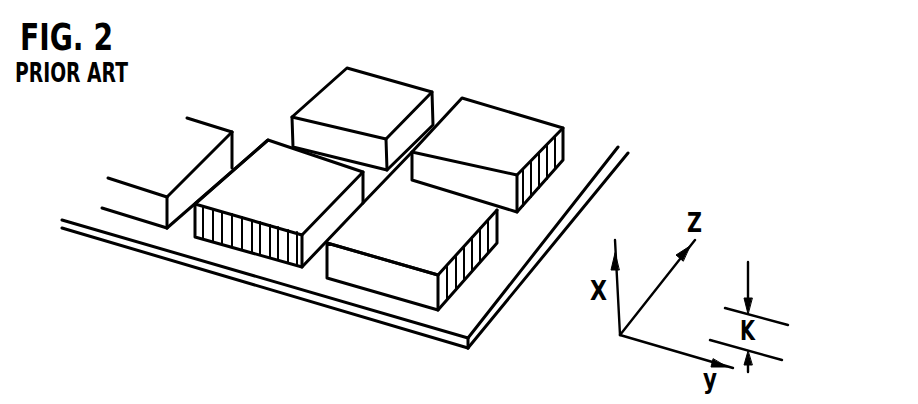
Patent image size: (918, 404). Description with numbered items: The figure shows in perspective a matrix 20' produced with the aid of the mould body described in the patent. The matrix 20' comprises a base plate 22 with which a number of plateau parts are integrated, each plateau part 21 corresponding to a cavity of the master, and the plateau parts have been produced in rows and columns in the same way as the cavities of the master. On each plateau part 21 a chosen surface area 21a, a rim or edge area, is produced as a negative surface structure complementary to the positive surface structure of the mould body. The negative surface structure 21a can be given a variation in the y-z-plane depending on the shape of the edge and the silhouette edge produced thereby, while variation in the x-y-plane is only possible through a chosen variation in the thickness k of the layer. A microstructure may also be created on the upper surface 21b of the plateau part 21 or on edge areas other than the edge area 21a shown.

The matrix 20' is at (345, 220).
The plateau part 21 is at (348, 265).
The surface area 21a is at (480, 263).
The upper surface 21b is at (394, 240).
The base plate 22 is at (195, 283).